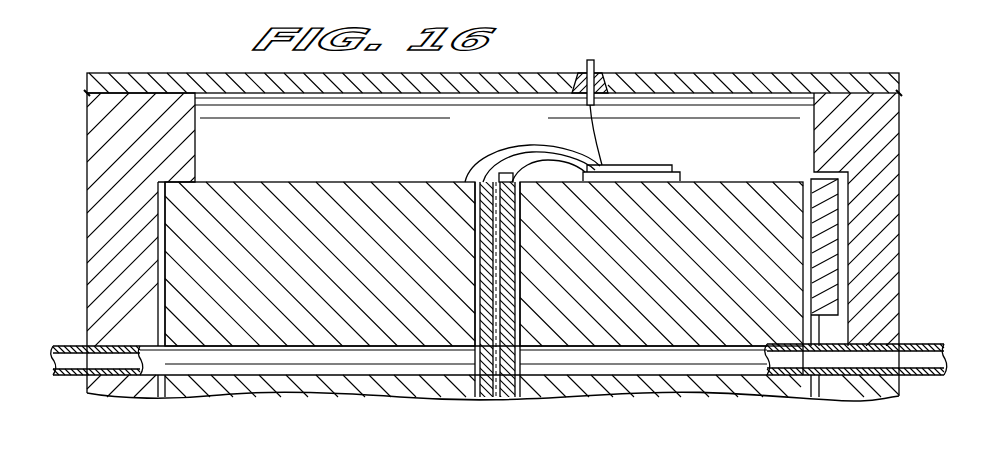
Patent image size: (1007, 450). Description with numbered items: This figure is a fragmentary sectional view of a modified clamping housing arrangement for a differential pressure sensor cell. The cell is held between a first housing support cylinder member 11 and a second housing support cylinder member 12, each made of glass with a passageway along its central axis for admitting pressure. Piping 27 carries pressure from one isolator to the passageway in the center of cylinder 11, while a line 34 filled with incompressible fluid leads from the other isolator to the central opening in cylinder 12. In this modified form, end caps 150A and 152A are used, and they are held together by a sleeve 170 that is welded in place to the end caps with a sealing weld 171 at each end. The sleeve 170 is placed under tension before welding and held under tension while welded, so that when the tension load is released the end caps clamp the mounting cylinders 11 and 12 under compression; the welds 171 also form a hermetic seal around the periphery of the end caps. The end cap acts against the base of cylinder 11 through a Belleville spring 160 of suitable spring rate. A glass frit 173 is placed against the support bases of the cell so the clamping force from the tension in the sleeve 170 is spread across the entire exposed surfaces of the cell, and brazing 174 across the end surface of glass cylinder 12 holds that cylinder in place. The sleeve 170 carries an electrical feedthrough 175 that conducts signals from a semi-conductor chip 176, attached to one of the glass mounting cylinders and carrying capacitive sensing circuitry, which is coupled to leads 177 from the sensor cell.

The first housing support cylinder member 11 is at (754, 200).
The second housing support cylinder member 12 is at (340, 196).
The piping 27 is at (925, 344).
The line 34 is at (66, 346).
The end cap 150A is at (890, 160).
The end cap 152A is at (100, 172).
The Belleville spring 160 is at (831, 202).
The sleeve 170 is at (518, 73).
The sealing weld 171 is at (87, 93).
The glass frit 173 is at (538, 414).
The brazing 174 is at (163, 198).
The electrical feedthrough 175 is at (606, 82).
The semi-conductor chip 176 is at (648, 166).
The leads 177 is at (526, 153).